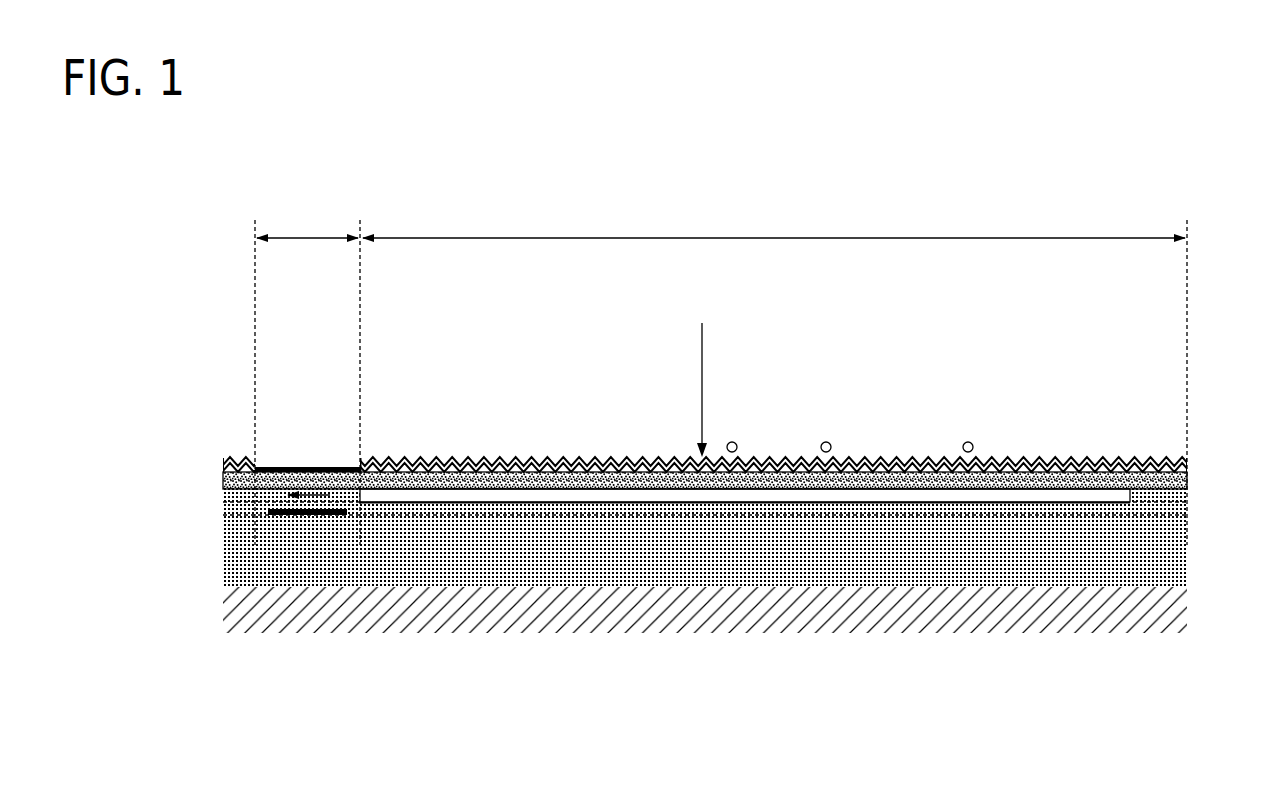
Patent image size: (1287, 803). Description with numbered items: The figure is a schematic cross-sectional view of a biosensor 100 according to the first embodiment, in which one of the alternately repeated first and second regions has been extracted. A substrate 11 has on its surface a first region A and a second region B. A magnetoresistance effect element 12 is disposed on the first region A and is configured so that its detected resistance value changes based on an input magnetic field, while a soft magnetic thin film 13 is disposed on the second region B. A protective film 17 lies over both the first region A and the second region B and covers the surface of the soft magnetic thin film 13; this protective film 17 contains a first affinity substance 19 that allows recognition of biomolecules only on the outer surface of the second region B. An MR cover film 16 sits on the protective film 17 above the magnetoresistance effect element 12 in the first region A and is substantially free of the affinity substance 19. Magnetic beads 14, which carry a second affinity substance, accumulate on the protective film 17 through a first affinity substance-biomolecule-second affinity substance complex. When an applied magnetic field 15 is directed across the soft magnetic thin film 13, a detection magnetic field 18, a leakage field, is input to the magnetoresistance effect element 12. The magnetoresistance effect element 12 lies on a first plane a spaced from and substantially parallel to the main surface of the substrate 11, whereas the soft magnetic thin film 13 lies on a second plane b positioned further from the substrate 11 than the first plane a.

The biosensor 100 is at (230, 258).
The substrate 11 is at (720, 630).
The magnetoresistance effect element 12 is at (296, 517).
The soft magnetic thin film 13 is at (750, 503).
The magnetic beads 14 is at (968, 441).
The applied magnetic field 15 is at (702, 393).
The MR cover film 16 is at (305, 466).
The protective film 17 is at (1190, 480).
The detection magnetic field 18 is at (287, 495).
The affinity substance 19 is at (1127, 462).
The first region A is at (307, 221).
The second region B is at (774, 221).
The first plane a is at (1192, 511).
The second plane b is at (1200, 495).